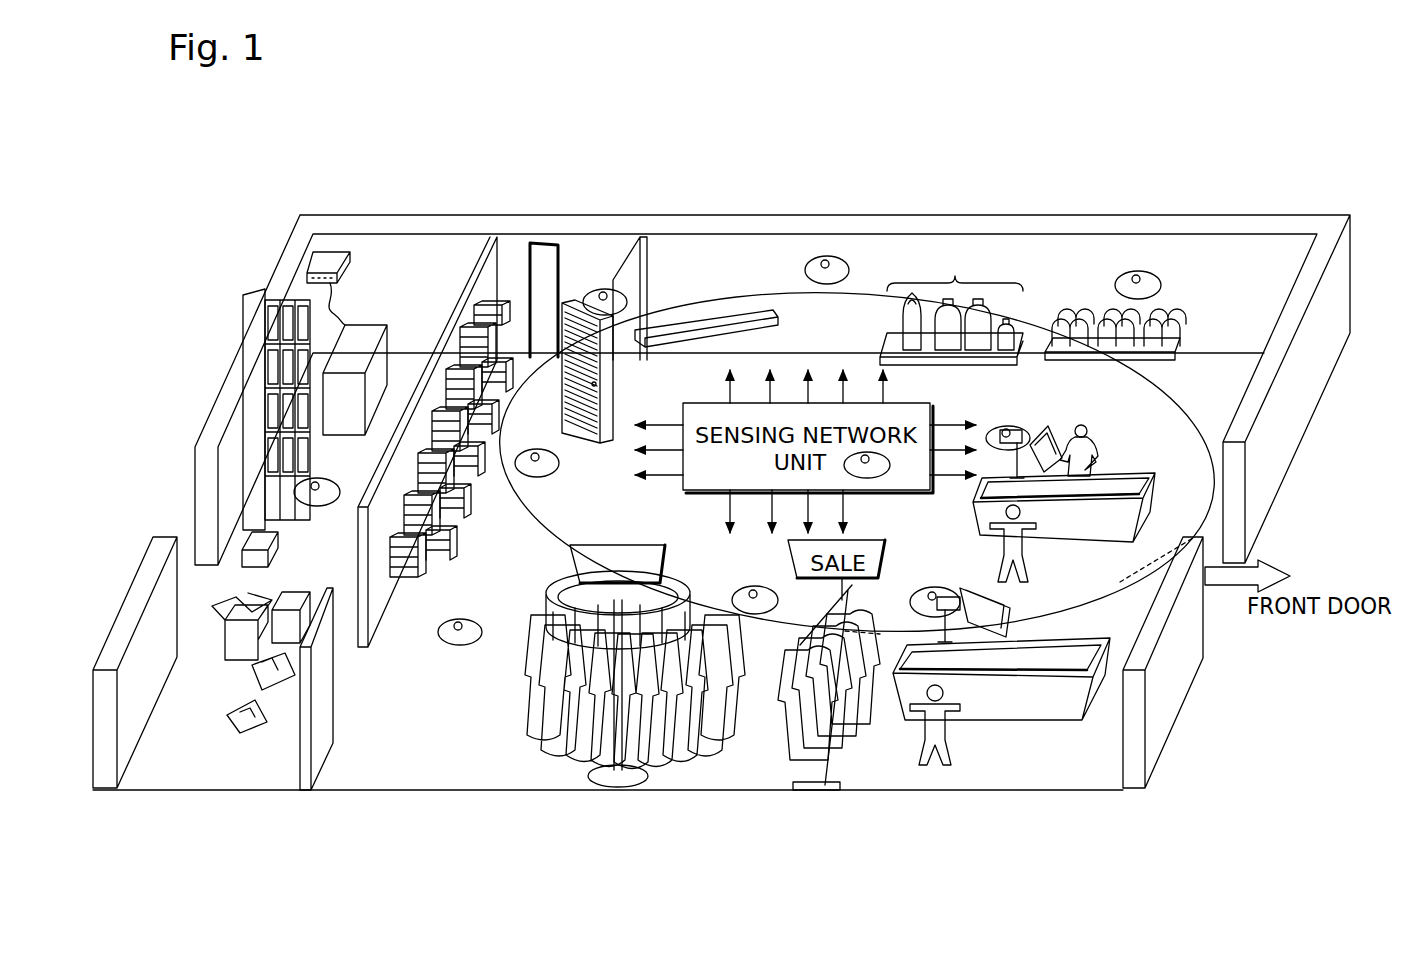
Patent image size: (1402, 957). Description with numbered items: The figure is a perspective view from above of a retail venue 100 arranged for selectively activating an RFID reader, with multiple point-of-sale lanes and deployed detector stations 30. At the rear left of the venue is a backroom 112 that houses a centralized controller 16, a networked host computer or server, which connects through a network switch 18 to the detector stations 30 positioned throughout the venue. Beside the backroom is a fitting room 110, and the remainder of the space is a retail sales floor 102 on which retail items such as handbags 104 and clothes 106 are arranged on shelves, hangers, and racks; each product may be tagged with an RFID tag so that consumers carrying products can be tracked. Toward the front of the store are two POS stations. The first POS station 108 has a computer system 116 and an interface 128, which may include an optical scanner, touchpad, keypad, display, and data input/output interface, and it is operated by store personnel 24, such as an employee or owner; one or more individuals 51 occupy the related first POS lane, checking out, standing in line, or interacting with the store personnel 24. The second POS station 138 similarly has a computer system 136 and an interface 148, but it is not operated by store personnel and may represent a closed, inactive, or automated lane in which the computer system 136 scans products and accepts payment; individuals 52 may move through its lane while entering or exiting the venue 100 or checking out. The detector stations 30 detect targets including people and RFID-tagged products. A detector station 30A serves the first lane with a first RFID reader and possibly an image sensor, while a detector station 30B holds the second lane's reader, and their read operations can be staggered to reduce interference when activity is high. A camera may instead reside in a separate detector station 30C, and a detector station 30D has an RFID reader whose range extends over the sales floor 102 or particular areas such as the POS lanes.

The retail venue 100 is at (232, 198).
The retail sales floor 102 is at (385, 793).
The handbags 104 is at (955, 283).
The clothes 106 is at (520, 740).
The POS station 108 is at (1116, 453).
The fitting room 110 is at (585, 250).
The backroom 112 is at (208, 780).
The computer system 116 is at (1044, 430).
The interface 128 is at (1008, 427).
The computer system 136 is at (978, 582).
The POS station 138 is at (1030, 633).
The interface 148 is at (946, 594).
The centralized controller 16 is at (370, 335).
The network switch 18 is at (353, 264).
The store personnel 24 is at (1086, 438).
The detector stations 30 is at (613, 303).
The detector station 30A is at (992, 449).
The detector station 30B is at (912, 615).
The detector station 30C is at (882, 478).
The detector station 30D is at (760, 615).
The individuals 51 is at (1013, 584).
The individuals 52 is at (935, 766).